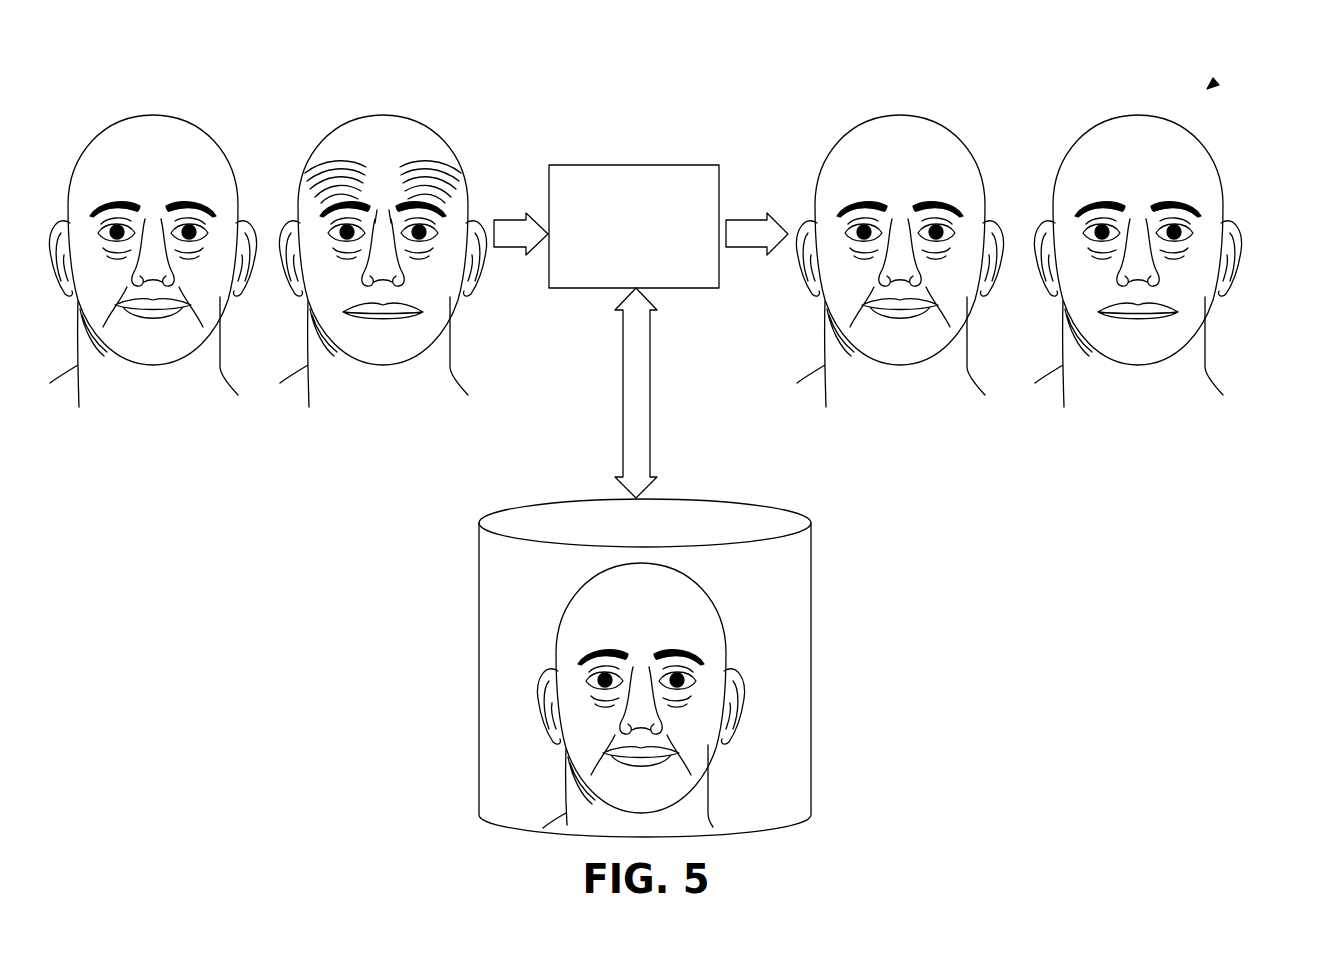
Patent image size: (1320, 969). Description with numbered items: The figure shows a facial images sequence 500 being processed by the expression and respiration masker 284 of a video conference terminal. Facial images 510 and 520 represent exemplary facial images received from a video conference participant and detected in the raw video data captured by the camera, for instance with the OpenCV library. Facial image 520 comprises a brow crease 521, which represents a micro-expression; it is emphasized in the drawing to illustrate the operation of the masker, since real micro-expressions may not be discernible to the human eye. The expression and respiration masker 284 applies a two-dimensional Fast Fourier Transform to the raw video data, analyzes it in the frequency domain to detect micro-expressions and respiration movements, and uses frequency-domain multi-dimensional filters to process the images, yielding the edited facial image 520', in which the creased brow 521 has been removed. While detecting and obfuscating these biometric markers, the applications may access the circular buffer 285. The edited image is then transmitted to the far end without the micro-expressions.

The facial images sequence 500 is at (1211, 86).
The facial image 510 is at (526, 441).
The facial image 520 is at (382, 230).
The brow crease 521 is at (392, 151).
The edited facial image 520' is at (1137, 230).
The expression and respiration masker 284 is at (634, 165).
The circular buffer 285 is at (765, 507).